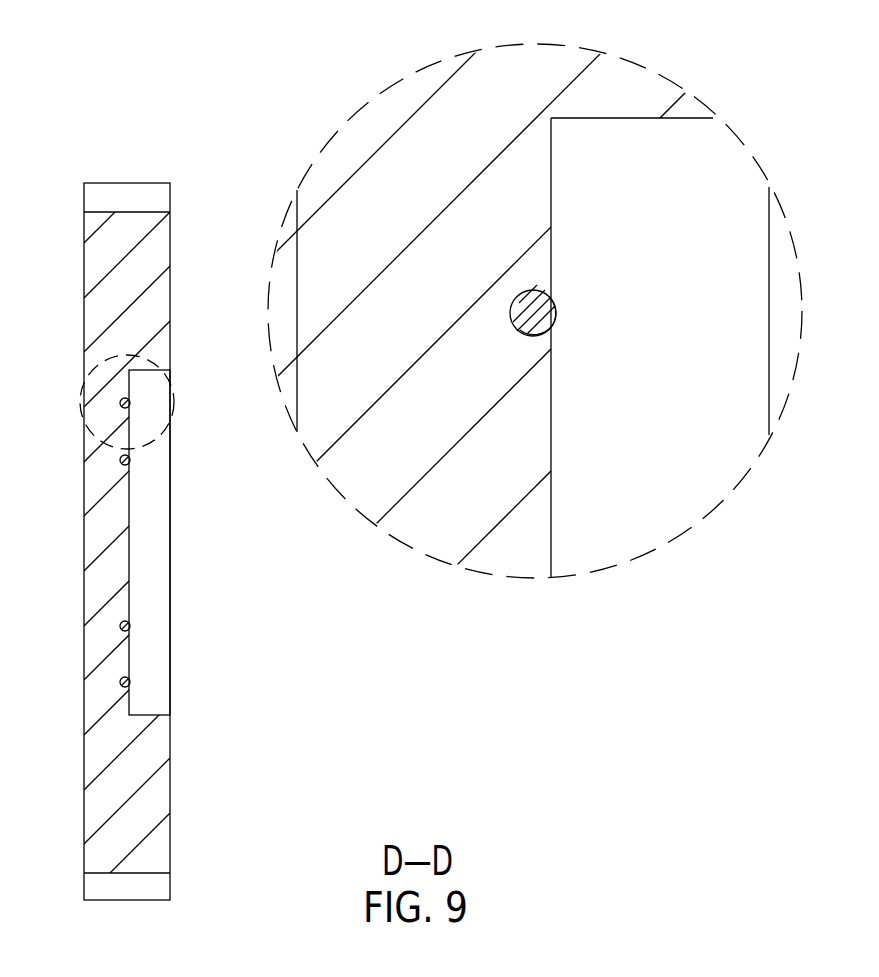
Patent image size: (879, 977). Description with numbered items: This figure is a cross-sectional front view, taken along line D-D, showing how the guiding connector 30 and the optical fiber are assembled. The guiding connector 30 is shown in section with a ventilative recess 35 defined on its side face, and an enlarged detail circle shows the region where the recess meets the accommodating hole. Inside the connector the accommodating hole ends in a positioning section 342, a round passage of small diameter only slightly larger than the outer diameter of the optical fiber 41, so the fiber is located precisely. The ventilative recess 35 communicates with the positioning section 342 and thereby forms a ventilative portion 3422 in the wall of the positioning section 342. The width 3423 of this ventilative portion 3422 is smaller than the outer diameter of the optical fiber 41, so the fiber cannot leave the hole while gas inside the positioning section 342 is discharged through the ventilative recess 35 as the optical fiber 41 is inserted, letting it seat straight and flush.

The guiding connector 30 is at (92, 249).
The ventilative recess 35 is at (148, 582).
The optical fiber 41 is at (533, 312).
The positioning section 342 is at (522, 333).
The ventilative portion 3422 is at (557, 312).
The width of the ventilative portion 3423 is at (550, 333).